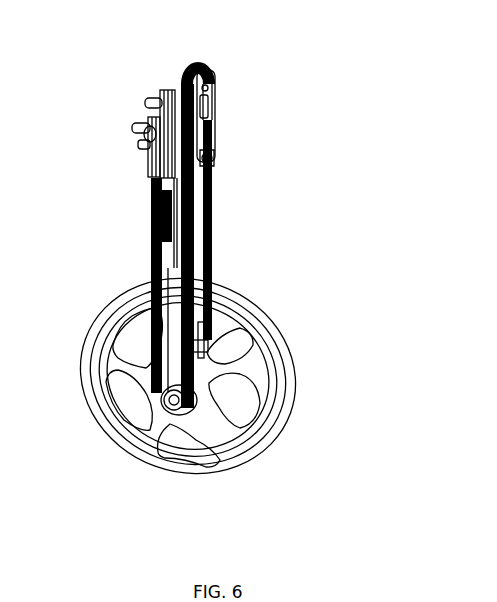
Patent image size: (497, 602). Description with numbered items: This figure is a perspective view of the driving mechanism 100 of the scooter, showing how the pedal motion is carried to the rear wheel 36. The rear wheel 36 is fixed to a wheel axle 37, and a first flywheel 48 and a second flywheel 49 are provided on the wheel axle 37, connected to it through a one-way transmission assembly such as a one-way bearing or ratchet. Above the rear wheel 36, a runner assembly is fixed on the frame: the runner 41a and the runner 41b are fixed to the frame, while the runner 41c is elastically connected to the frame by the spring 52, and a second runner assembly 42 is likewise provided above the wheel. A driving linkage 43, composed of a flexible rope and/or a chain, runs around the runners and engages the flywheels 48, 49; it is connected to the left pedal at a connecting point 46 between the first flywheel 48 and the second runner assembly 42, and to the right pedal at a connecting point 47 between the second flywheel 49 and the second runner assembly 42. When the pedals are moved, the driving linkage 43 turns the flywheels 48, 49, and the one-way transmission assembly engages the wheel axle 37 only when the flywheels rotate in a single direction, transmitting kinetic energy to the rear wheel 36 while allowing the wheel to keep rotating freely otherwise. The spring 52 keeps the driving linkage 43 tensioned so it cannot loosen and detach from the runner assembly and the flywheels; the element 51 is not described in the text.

The driving mechanism 100 is at (404, 54).
The rear wheel 36 is at (280, 384).
The wheel axle 37 is at (176, 422).
The runner 41a is at (135, 138).
The runner 41b is at (150, 100).
The runner 41c is at (148, 166).
The second runner assembly 42 is at (208, 70).
The driving linkage 43 is at (212, 206).
The connecting point 46 is at (200, 348).
The connecting point 47 is at (211, 157).
The first flywheel 48 is at (192, 430).
The second flywheel 49 is at (198, 332).
The first plate 51 is at (150, 183).
The spring 52 is at (150, 220).